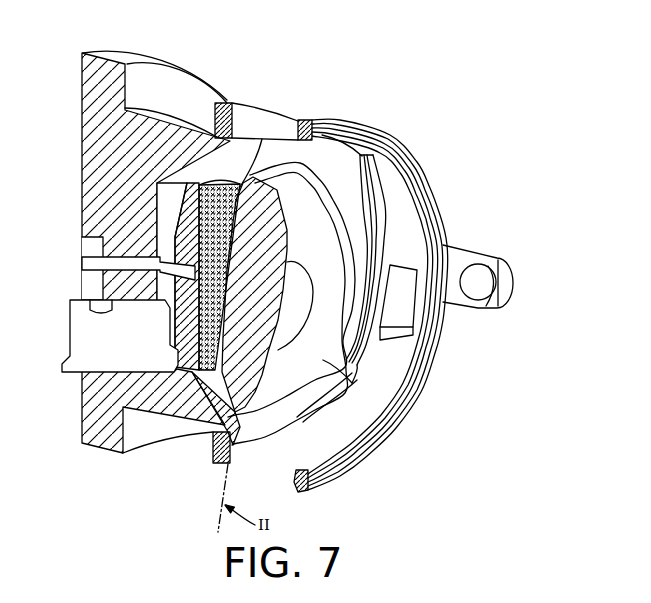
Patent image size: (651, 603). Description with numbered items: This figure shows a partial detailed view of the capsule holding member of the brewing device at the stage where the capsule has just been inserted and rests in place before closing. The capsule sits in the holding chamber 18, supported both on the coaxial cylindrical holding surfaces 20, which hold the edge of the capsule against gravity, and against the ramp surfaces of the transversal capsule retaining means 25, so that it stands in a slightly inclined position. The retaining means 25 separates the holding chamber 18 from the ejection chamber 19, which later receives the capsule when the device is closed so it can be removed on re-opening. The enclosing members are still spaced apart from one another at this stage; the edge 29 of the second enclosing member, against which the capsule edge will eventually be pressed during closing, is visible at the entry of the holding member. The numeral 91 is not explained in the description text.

The edge of the second enclosing member 29 is at (242, 137).
The holding chamber 18 is at (249, 165).
The capsule retaining means 25 is at (388, 197).
The ejection chamber 19 is at (390, 297).
The coaxial holding surfaces 20 is at (323, 360).
The ring flange 91 is at (350, 382).